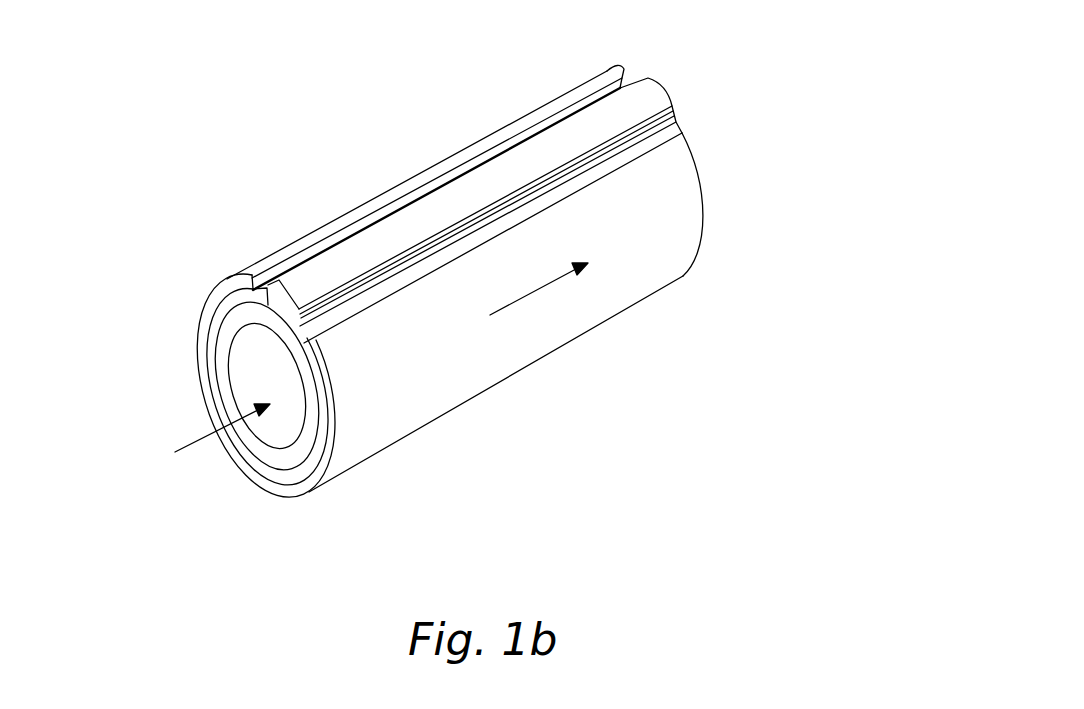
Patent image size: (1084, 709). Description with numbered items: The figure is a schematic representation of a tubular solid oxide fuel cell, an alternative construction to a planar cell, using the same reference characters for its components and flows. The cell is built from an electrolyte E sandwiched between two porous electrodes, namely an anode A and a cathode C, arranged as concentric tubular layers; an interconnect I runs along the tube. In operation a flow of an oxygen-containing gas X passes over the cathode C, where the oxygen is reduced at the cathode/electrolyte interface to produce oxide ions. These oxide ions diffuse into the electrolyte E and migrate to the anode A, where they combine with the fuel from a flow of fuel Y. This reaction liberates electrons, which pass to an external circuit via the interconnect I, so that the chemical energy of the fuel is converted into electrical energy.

The anode A is at (316, 490).
The cathode C is at (213, 320).
The electrolyte E is at (259, 285).
The interconnect I is at (568, 155).
The flow of oxygen-containing gas X is at (203, 445).
The flow of fuel Y is at (535, 292).